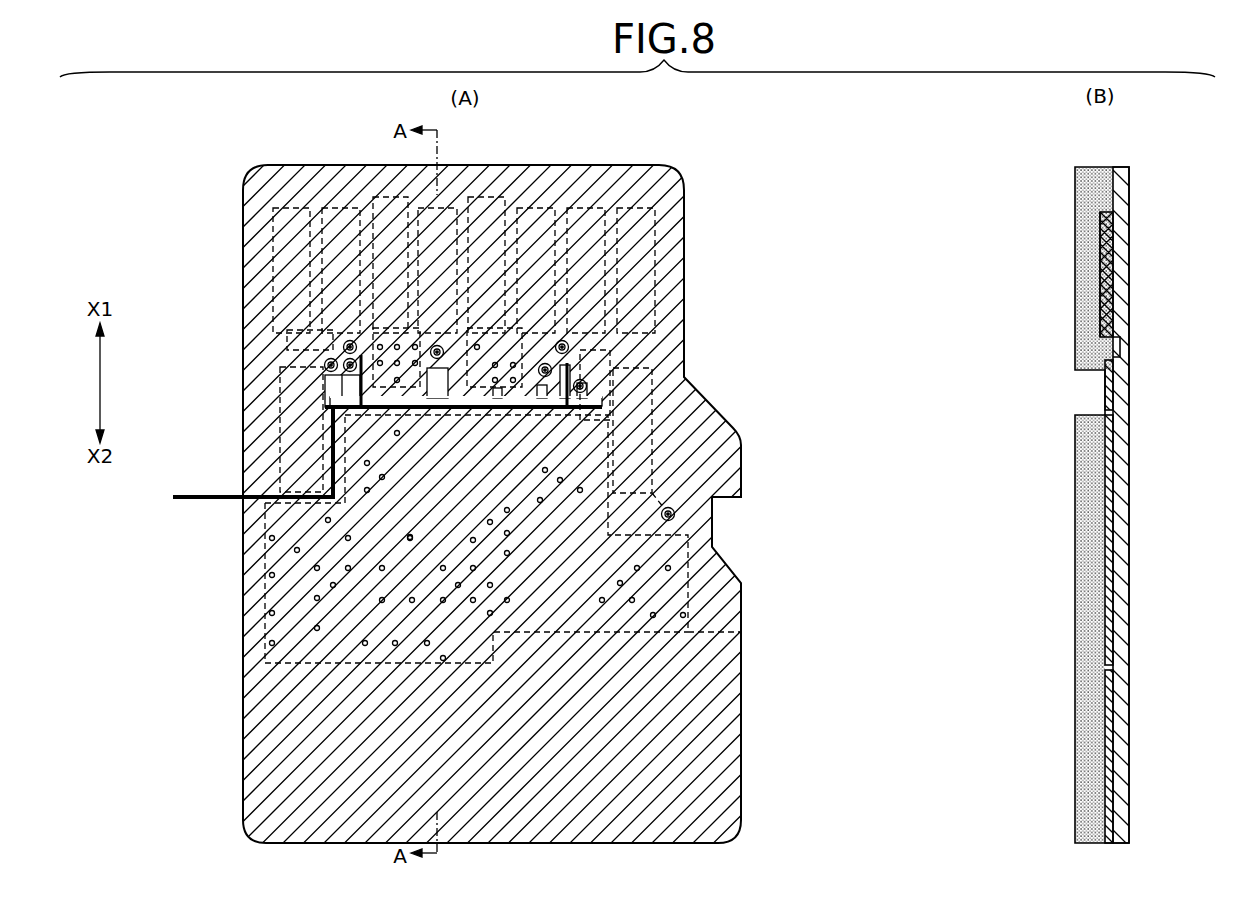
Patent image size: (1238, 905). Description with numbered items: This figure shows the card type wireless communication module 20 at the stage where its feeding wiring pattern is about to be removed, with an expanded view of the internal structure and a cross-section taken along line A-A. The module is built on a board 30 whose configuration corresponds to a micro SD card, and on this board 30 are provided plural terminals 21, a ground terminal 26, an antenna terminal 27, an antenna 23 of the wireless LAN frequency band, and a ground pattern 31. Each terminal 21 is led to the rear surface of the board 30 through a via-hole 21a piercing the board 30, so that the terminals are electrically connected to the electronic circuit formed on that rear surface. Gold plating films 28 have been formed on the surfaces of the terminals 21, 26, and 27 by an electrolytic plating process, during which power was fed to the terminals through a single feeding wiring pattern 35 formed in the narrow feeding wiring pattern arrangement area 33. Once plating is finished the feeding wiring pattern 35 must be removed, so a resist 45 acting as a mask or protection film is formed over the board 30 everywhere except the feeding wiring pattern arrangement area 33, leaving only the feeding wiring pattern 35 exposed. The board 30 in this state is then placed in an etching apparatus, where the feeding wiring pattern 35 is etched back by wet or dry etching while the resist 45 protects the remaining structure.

The card type wireless communication module 20 is at (619, 124).
The terminal 21 is at (394, 210).
The via-hole 21a is at (1120, 350).
The antenna 23 is at (705, 762).
The ground terminal 26 is at (285, 429).
The antenna terminal 27 is at (684, 373).
The plating film 28 is at (1100, 236).
The board 30 is at (703, 446).
The ground pattern 31 is at (348, 556).
The feeding wiring pattern arrangement area 33 is at (331, 446).
The feeding wiring pattern 35 is at (476, 407).
The resist 45 is at (668, 177).